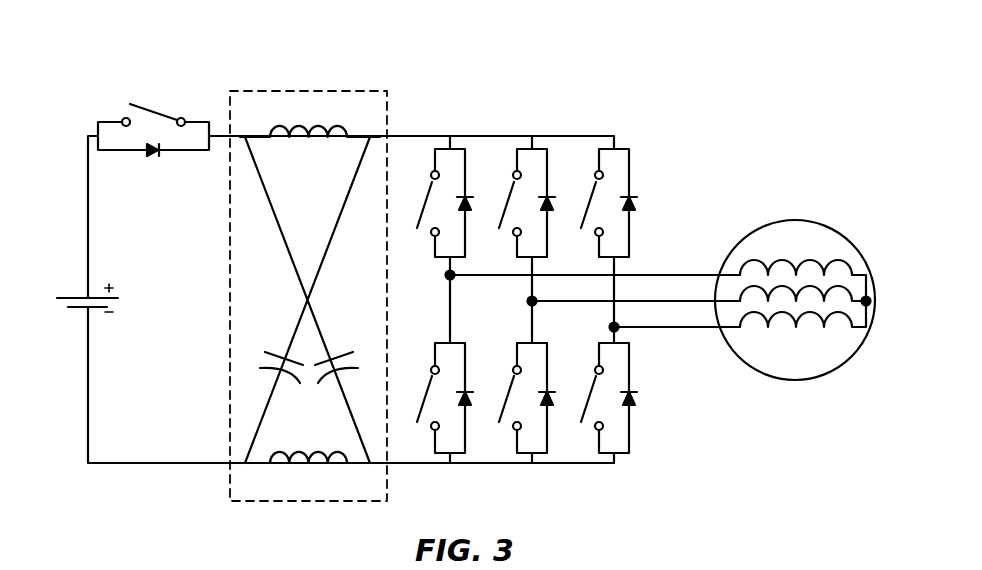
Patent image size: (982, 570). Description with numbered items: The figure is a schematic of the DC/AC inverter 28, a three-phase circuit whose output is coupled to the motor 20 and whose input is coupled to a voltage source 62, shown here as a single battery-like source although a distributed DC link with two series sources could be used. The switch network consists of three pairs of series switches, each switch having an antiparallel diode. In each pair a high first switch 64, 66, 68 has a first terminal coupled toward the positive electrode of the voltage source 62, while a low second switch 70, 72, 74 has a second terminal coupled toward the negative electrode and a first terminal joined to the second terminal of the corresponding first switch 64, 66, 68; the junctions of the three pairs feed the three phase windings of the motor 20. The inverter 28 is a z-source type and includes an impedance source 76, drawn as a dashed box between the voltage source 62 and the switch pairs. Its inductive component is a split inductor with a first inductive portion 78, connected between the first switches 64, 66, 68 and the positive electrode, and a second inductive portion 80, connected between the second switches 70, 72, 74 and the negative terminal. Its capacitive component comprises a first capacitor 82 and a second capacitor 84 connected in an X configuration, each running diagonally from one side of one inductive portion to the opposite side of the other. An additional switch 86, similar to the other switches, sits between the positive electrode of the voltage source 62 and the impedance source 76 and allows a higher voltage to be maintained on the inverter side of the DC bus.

The motor 20 is at (793, 219).
The DC/AC inverter 28 is at (566, 253).
The voltage source 62 is at (72, 291).
The first switch 64 is at (420, 198).
The first switch 66 is at (502, 198).
The first switch 68 is at (584, 198).
The second switch 70 is at (420, 392).
The second switch 72 is at (502, 392).
The second switch 74 is at (584, 392).
The impedance source 76 is at (308, 266).
The first inductive portion 78 is at (335, 127).
The second inductive portion 80 is at (300, 455).
The first capacitor 82 is at (277, 352).
The second capacitor 84 is at (340, 350).
The additional switch 86 is at (121, 110).